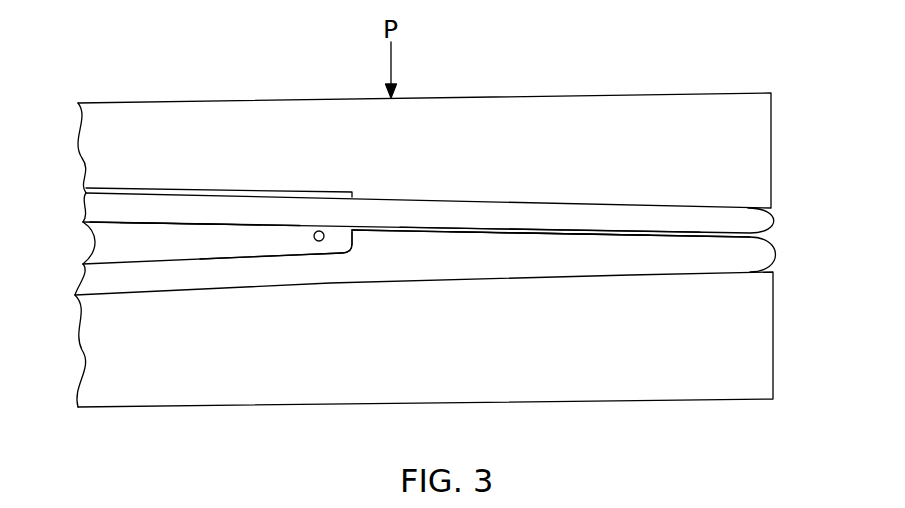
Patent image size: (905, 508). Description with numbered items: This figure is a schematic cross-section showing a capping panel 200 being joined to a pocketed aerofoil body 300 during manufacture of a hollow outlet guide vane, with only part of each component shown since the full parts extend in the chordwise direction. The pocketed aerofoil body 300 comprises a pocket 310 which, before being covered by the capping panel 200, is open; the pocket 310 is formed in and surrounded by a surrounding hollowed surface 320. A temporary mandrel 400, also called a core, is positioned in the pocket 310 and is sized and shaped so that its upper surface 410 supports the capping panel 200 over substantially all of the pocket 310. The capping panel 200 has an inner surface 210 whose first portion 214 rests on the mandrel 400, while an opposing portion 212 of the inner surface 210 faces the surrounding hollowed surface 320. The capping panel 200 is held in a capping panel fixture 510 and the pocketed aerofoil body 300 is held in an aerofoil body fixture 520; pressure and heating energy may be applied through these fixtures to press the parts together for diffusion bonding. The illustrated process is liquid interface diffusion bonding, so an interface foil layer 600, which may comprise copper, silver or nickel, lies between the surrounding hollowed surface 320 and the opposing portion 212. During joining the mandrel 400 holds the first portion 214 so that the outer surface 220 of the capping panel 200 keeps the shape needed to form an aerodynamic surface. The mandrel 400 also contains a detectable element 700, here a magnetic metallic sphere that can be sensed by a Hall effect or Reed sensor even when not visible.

The capping panel fixture 510 is at (760, 140).
The aerofoil body fixture 520 is at (762, 379).
The capping panel 200 is at (766, 230).
The inner surface 210 is at (597, 229).
The opposing portion of the inner surface 212 is at (498, 226).
The first portion of the inner surface 214 is at (150, 222).
The outer surface 220 is at (374, 193).
The interface foil layer 600 is at (773, 240).
The pocketed aerofoil body 300 is at (763, 257).
The pocket 310 is at (318, 254).
The surrounding hollowed surface 320 is at (560, 237).
The temporary mandrel 400 is at (143, 252).
The upper surface of the mandrel 410 is at (182, 226).
The detectable element 700 is at (316, 231).